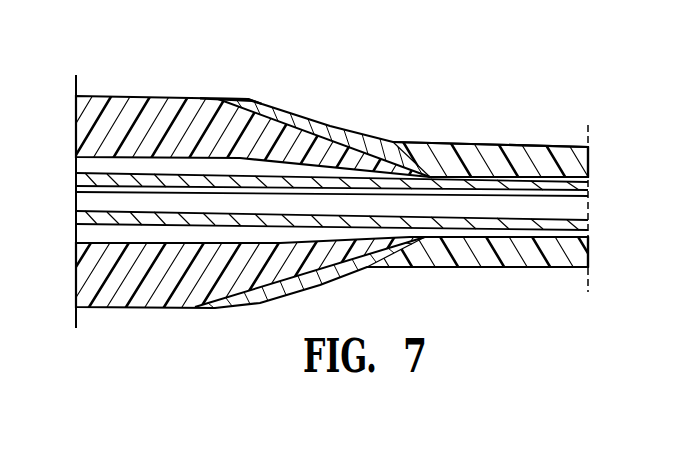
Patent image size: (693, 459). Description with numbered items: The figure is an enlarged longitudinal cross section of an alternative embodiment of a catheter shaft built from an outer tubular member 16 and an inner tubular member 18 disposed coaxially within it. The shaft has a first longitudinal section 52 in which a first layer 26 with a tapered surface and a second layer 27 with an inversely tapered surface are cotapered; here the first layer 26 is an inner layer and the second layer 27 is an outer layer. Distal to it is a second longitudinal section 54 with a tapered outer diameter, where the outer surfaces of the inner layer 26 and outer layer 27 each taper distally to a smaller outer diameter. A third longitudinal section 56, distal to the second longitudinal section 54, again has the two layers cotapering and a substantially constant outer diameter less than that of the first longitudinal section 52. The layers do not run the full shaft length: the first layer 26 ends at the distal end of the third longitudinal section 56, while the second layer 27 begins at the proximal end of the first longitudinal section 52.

The outer tubular member 16 is at (92, 308).
The inner tubular member 18 is at (78, 226).
The first layer 26 is at (75, 133).
The second layer 27 is at (581, 170).
The first longitudinal section 52 is at (220, 98).
The second longitudinal section 54 is at (330, 122).
The third longitudinal section 56 is at (458, 146).